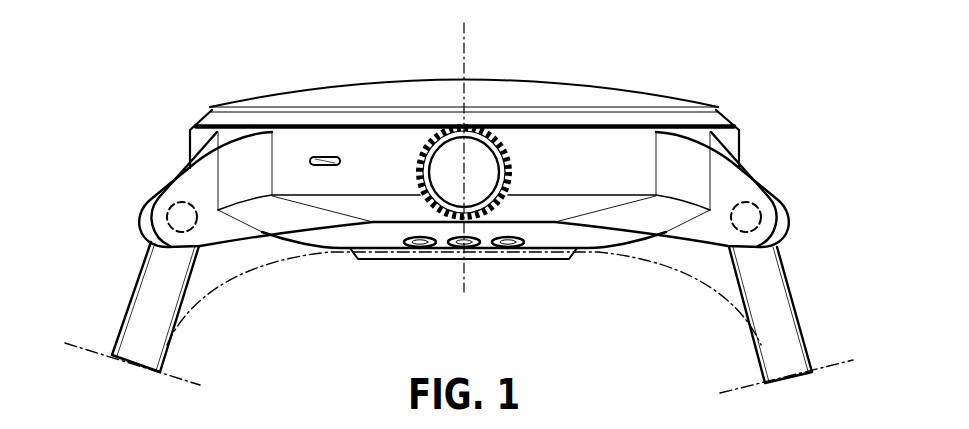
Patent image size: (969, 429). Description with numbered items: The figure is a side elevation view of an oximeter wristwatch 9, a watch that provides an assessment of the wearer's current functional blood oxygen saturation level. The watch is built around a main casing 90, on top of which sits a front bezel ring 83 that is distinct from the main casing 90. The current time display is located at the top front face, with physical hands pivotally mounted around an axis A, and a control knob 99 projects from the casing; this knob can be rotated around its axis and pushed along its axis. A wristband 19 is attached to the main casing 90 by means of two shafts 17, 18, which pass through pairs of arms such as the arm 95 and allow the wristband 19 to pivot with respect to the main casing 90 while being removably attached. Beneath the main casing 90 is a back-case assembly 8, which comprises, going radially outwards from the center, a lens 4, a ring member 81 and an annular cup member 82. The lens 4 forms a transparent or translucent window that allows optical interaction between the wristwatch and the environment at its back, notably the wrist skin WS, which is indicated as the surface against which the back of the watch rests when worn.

The lens 4 is at (430, 260).
The back-case assembly 8 is at (464, 320).
The oximeter wristwatch 9 is at (760, 83).
The shaft 17 is at (182, 217).
The shaft 18 is at (746, 217).
The wristband 19 is at (127, 312).
The ring member 81 is at (570, 259).
The annular cup member 82 is at (613, 231).
The front bezel ring 83 is at (207, 117).
The main casing 90 is at (290, 176).
The arm 95 is at (762, 185).
The control knob 99 is at (487, 127).
The axis A is at (462, 47).
The wrist skin WS is at (200, 293).